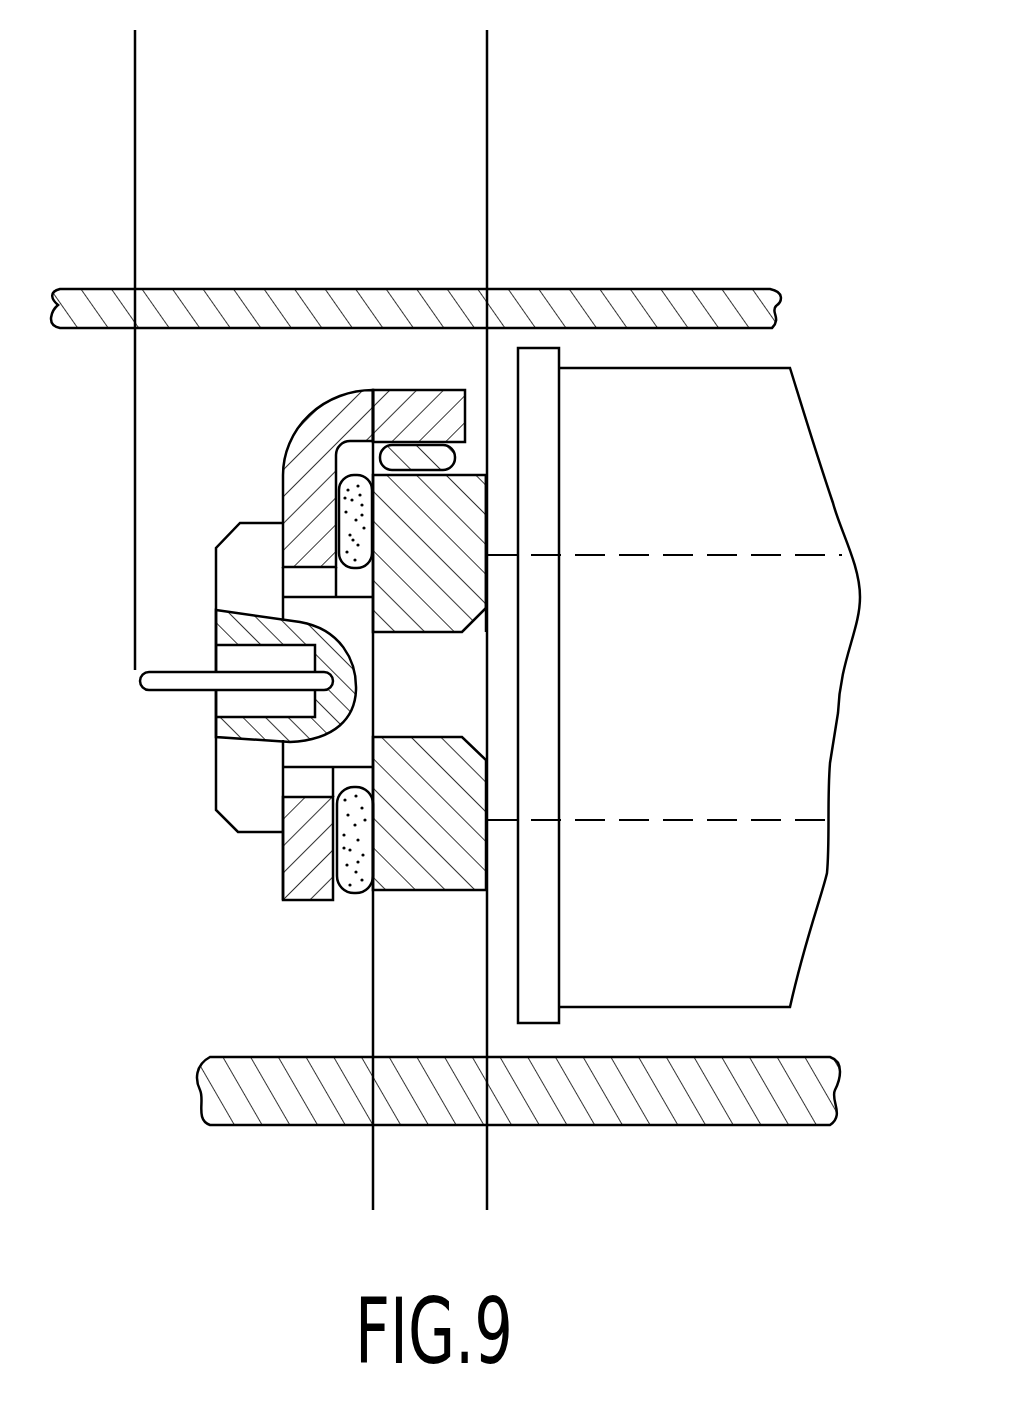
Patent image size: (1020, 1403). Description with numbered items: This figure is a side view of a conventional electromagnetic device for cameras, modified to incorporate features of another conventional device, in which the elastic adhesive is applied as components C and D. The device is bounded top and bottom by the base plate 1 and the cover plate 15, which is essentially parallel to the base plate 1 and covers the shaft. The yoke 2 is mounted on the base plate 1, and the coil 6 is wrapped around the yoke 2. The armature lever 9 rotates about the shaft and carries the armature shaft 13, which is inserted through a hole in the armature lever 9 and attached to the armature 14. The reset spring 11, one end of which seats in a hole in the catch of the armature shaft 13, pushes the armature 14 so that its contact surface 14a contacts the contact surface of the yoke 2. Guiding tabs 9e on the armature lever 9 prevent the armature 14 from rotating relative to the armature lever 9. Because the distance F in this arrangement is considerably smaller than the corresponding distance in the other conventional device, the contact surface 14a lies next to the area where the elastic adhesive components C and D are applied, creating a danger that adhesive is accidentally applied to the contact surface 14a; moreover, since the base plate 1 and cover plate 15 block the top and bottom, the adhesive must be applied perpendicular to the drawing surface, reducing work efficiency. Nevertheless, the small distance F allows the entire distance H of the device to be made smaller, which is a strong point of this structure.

The base plate 1 is at (630, 1123).
The yoke 2 is at (500, 822).
The coil 6 is at (762, 1007).
The armature lever 9 is at (293, 858).
The guiding tabs 9e is at (427, 413).
The reset spring 11 is at (163, 670).
The armature shaft 13 is at (224, 774).
The armature 14 is at (403, 888).
The contact surface 14a is at (488, 528).
The cover plate 15 is at (165, 298).
The elastic adhesive component C is at (342, 512).
The elastic adhesive component D is at (382, 452).
The distance H is at (487, 60).
The distance F is at (487, 1187).